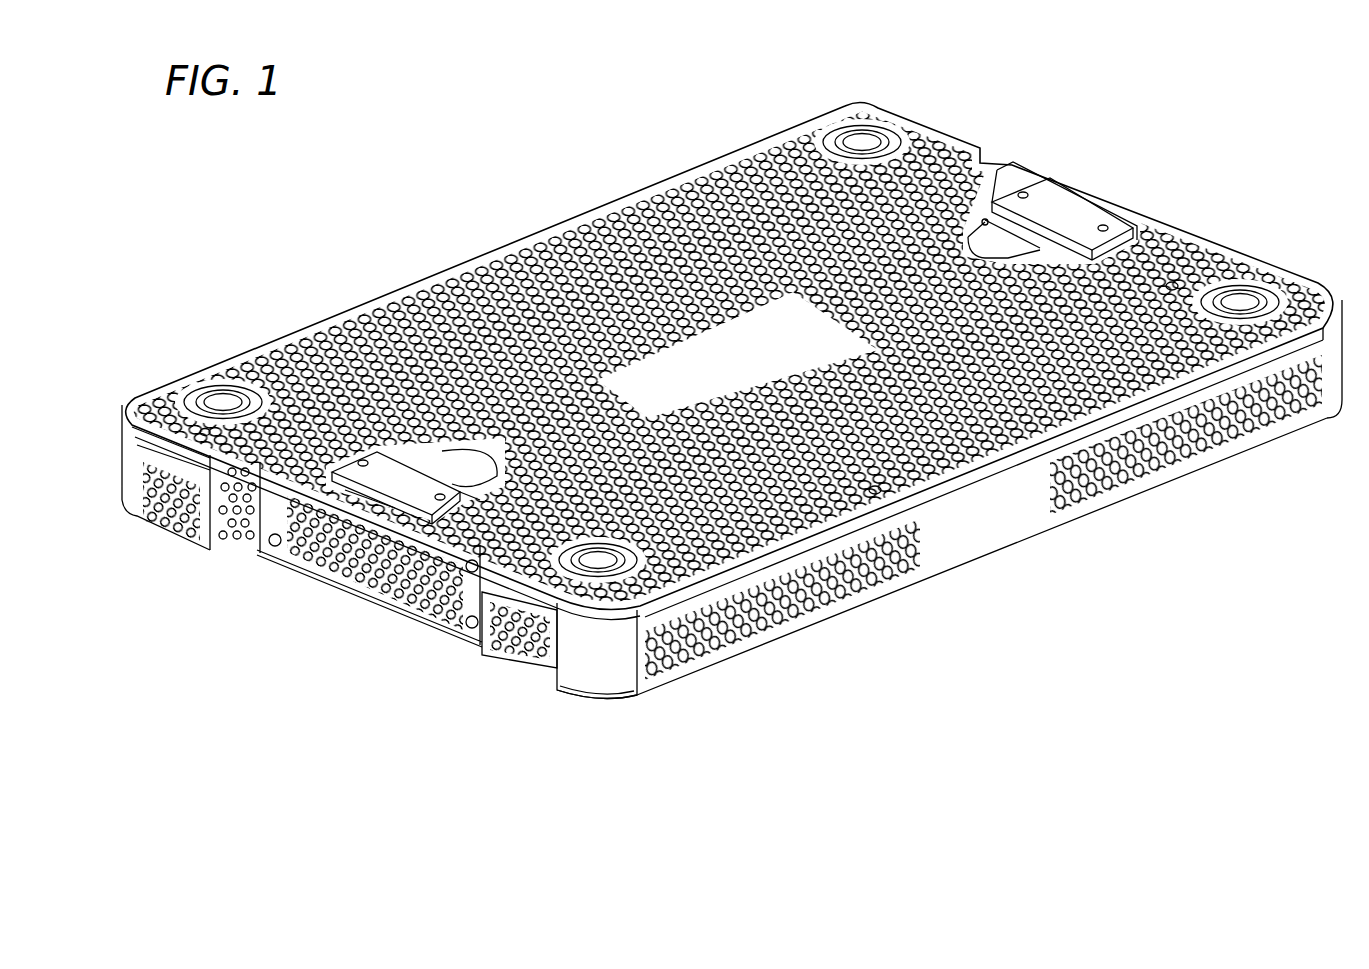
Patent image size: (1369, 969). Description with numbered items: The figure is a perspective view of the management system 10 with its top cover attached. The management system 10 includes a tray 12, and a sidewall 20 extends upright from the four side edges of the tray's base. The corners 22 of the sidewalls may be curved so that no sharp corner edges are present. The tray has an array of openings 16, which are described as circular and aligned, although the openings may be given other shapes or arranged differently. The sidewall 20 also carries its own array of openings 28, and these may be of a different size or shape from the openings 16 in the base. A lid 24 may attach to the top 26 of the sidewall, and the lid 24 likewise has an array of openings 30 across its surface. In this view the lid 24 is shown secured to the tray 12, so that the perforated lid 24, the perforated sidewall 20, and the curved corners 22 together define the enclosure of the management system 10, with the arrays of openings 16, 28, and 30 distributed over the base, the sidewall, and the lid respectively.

The management system 10 is at (562, 200).
The tray 12 is at (615, 686).
The openings 16 is at (878, 492).
The sidewall 20 is at (1245, 434).
The corners 22 is at (580, 650).
The lid 24 is at (203, 431).
The top 26 is at (585, 605).
The openings 28 is at (790, 620).
The openings 30 is at (1174, 283).